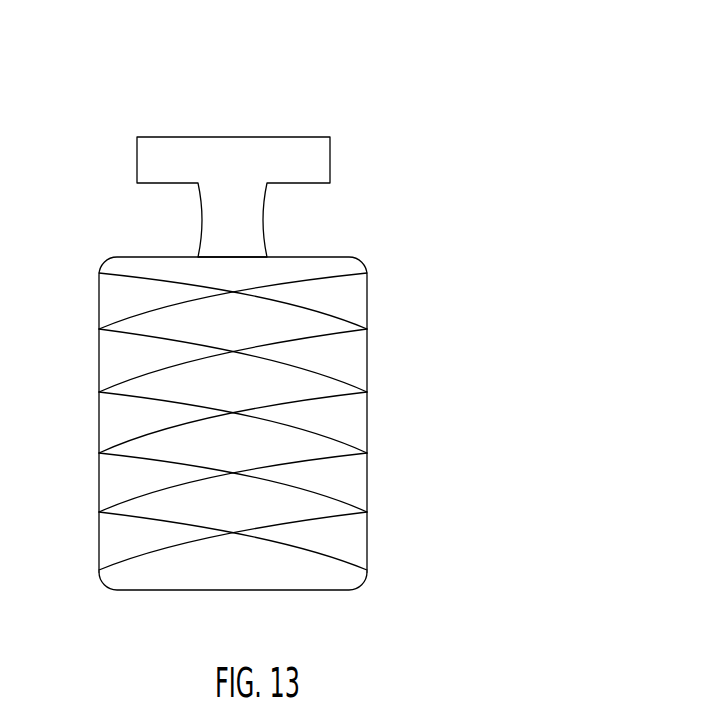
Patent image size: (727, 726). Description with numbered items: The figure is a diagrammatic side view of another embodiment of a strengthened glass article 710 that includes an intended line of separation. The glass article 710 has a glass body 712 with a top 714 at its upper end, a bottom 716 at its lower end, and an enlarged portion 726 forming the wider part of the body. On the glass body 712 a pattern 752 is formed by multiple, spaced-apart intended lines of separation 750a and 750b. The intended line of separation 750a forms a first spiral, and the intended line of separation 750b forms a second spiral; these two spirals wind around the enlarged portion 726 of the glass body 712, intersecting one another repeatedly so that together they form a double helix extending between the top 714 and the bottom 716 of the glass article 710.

The glass article 710 is at (493, 273).
The glass body 712 is at (388, 440).
The top 714 is at (227, 113).
The bottom 716 is at (152, 605).
The enlarged portion 726 is at (88, 532).
The pattern 752 is at (90, 408).
The intended line of separation 750a is at (158, 277).
The intended line of separation 750b is at (327, 277).